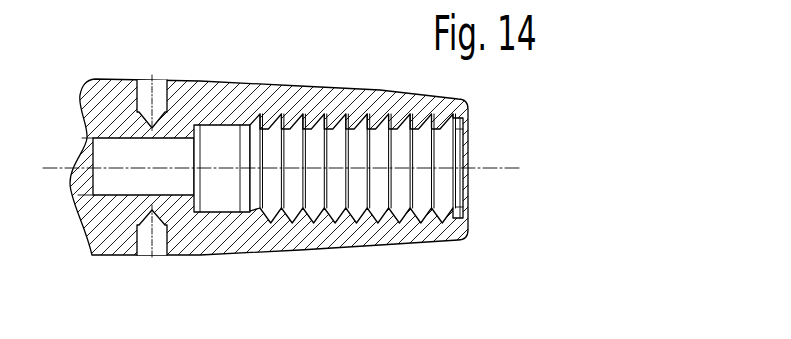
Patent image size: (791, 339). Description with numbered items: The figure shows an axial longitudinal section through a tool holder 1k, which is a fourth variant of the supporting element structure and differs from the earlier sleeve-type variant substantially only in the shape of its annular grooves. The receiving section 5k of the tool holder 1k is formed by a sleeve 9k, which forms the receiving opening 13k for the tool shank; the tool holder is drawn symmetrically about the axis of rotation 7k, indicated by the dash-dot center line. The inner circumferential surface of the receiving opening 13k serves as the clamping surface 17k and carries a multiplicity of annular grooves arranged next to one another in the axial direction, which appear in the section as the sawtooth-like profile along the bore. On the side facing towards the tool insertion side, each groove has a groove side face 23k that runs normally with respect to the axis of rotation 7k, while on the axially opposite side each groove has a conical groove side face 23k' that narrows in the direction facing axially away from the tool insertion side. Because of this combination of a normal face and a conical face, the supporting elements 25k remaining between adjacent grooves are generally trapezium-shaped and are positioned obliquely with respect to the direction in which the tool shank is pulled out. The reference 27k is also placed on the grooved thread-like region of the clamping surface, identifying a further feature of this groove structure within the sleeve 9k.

The tool holder 1k is at (124, 73).
The receiving section 5k is at (365, 86).
The sleeve 9k is at (296, 103).
The axis of rotation 7k is at (490, 168).
The receiving opening 13k is at (455, 190).
The supporting element 25k is at (284, 250).
The thread turns 27k is at (297, 218).
The clamping surface 17k is at (352, 208).
The groove side face 23k is at (404, 206).
The conical groove side face 23k' is at (458, 205).